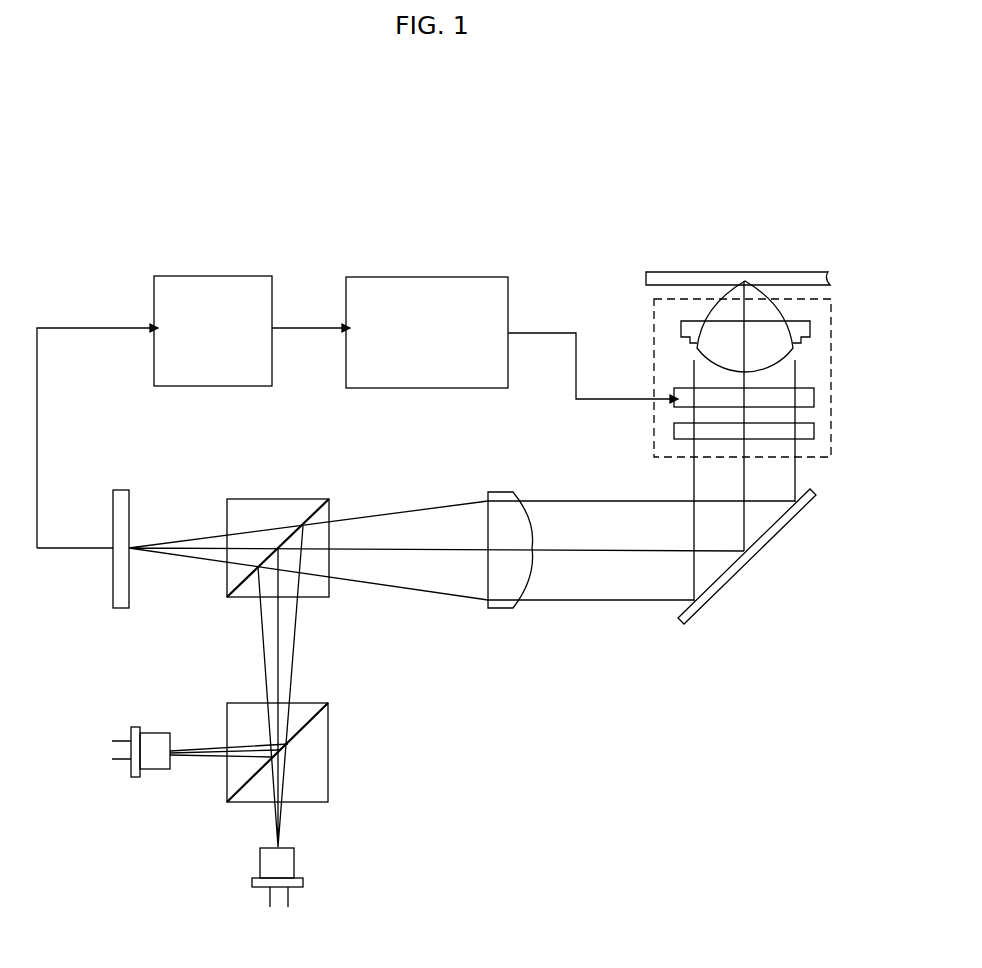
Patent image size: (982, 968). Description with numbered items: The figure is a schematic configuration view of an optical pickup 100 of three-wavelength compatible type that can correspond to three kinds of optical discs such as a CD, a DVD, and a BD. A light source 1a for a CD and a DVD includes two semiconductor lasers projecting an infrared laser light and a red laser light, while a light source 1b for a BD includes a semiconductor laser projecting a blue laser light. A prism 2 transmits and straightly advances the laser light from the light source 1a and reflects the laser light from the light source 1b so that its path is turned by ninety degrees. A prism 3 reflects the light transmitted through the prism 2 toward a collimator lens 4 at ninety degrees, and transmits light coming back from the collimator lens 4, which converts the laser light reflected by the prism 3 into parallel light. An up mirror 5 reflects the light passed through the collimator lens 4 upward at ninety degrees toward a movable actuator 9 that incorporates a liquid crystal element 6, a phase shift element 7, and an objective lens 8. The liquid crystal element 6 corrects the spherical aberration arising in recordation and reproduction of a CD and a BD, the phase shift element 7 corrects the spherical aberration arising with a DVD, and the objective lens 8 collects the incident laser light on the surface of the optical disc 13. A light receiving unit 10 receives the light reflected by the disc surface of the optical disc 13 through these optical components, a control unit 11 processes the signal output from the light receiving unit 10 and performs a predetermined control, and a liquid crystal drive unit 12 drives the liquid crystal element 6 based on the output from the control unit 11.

The optical pickup 100 is at (623, 692).
The light source for a CD and a DVD 1a is at (295, 865).
The light source for a BD 1b is at (158, 733).
The prism 2 is at (330, 754).
The prism 3 is at (281, 499).
The collimator lens 4 is at (500, 492).
The up mirror 5 is at (734, 574).
The liquid crystal element 6 is at (815, 398).
The phase shift element 7 is at (815, 428).
The objective lens 8 is at (812, 323).
The movable actuator 9 is at (654, 362).
The light receiving unit 10 is at (113, 522).
The control unit 11 is at (202, 276).
The liquid crystal drive unit 12 is at (414, 277).
The optical disc 13 is at (700, 272).